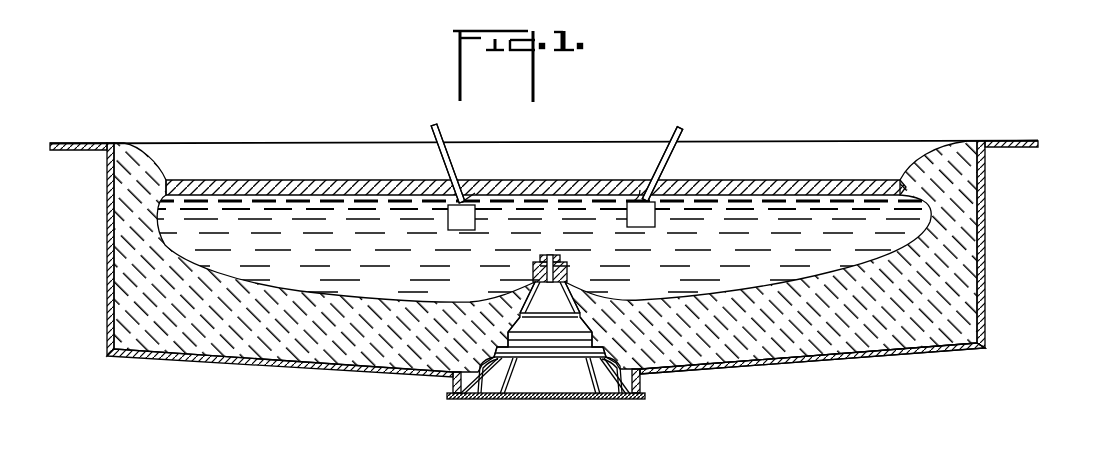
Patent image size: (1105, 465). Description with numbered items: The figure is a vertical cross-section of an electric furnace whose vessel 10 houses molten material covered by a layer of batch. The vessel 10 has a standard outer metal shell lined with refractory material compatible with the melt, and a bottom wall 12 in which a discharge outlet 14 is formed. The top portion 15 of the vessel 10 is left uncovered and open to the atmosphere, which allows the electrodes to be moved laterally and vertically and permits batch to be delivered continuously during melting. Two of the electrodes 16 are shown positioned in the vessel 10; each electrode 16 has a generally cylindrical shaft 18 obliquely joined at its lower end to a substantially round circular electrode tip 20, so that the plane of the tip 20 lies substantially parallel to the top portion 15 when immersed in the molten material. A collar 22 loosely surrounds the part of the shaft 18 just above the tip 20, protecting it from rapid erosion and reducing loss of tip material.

The vessel 10 is at (996, 260).
The bottom wall 12 is at (694, 370).
The discharge outlet 14 is at (567, 271).
The top portion 15 is at (178, 149).
The electrode 16 is at (420, 132).
The shaft 18 is at (452, 160).
The electrode tip 20 is at (455, 226).
The collar 22 is at (478, 190).